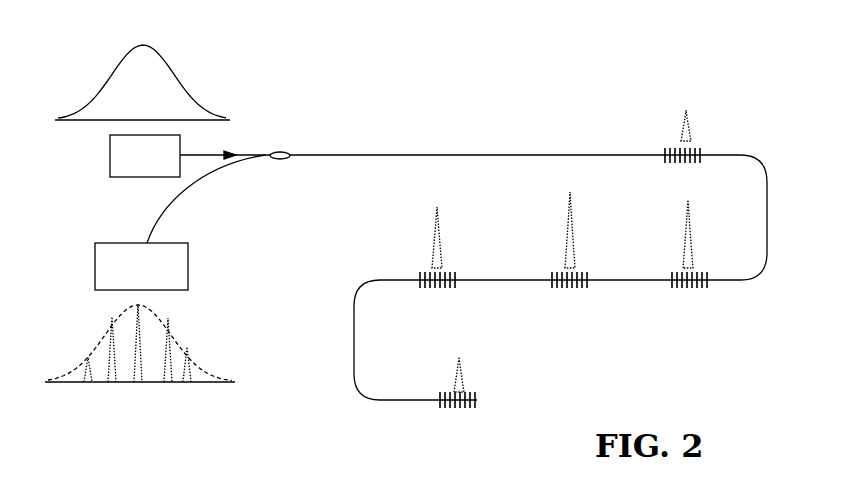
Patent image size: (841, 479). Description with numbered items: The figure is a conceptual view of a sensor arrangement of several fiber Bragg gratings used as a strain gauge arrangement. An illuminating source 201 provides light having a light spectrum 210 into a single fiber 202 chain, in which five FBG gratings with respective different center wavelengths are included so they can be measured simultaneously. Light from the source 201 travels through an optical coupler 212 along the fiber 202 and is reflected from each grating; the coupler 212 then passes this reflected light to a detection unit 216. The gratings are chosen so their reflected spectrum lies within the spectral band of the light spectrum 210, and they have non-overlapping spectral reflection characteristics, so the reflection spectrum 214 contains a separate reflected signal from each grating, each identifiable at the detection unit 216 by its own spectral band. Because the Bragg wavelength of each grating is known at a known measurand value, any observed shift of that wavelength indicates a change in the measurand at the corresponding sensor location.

The illuminating source 201 is at (110, 145).
The fiber 202 is at (478, 152).
The light spectrum 210 is at (85, 113).
The optical coupler 212 is at (284, 151).
The reflection spectrum 214 is at (83, 365).
The detection unit 216 is at (95, 268).